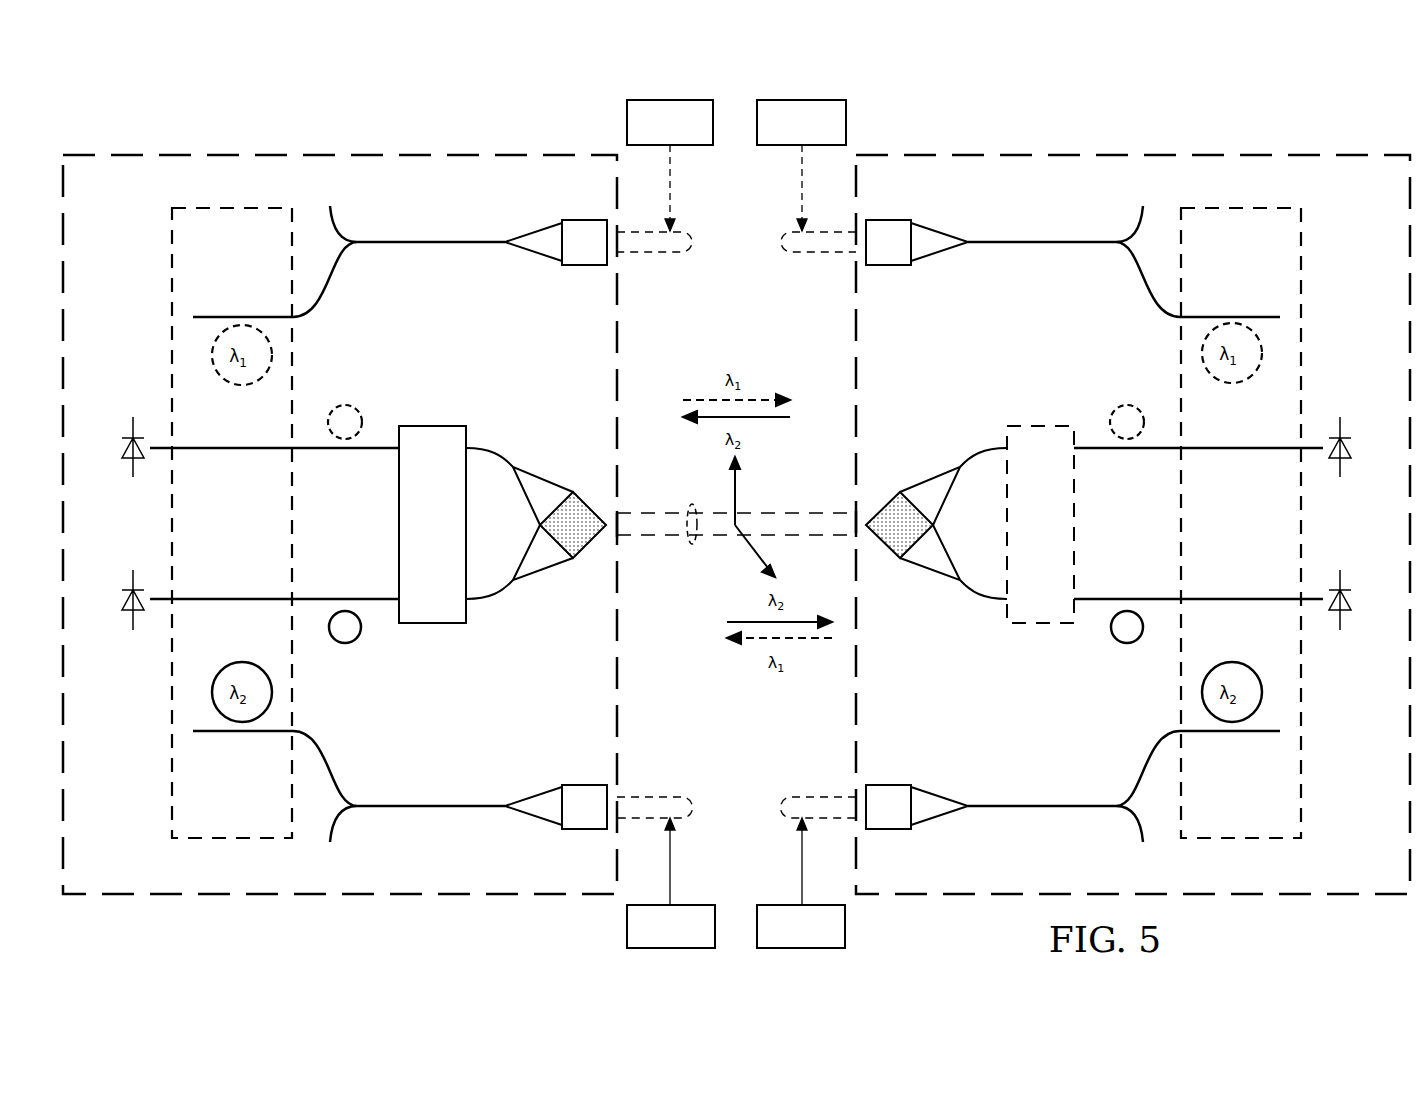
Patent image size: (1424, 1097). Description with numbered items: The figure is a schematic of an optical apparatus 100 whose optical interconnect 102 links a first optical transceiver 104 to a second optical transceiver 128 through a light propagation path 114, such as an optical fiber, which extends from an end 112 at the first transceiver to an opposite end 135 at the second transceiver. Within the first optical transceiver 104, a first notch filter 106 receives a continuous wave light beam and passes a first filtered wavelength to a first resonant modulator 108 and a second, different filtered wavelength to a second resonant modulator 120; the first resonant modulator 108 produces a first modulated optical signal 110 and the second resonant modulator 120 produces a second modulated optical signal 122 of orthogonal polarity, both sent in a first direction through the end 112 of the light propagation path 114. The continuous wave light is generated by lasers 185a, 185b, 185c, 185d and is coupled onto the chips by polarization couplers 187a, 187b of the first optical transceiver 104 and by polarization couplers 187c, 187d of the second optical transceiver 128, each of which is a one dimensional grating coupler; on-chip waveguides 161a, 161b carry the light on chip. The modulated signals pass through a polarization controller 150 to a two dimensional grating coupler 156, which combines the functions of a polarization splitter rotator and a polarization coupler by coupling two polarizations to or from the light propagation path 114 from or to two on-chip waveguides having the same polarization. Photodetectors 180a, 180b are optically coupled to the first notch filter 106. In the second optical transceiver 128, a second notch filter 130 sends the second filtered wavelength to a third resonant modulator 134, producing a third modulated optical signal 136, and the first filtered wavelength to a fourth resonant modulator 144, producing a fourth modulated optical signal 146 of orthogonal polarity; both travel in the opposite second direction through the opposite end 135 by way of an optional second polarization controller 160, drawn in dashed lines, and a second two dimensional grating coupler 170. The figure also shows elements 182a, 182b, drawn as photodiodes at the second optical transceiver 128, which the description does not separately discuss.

The optical apparatus 100 is at (118, 102).
The optical interconnect 102 is at (1140, 492).
The first optical transceiver 104 is at (291, 155).
The first notch filter 106 is at (212, 540).
The first resonant modulator 108 is at (365, 420).
The first modulated optical signal 110 is at (222, 446).
The end of light propagation path 112 is at (620, 508).
The light propagation path 114 is at (692, 546).
The second resonant modulator 120 is at (362, 637).
The second modulated optical signal 122 is at (222, 601).
The second optical transceiver 128 is at (1185, 155).
The second notch filter 130 is at (1222, 540).
The third resonant modulator 134 is at (1108, 637).
The opposite end of light propagation path 135 is at (852, 508).
The third modulated optical signal 136 is at (1252, 601).
The fourth resonant modulator 144 is at (1110, 418).
The fourth modulated optical signal 146 is at (1252, 446).
The polarization controller 150 is at (398, 526).
The two dimensional grating coupler 156 is at (590, 500).
The second polarization controller 160 is at (1074, 520).
The on-chip waveguide 161a is at (437, 240).
The second on-chip waveguide 161b is at (437, 808).
The second two dimensional grating coupler 170 is at (880, 500).
The photodetector 180a is at (124, 455).
The photodetector 180b is at (124, 608).
The photodetector 182a is at (1348, 608).
The photodetector 182b is at (1348, 455).
The laser 185a is at (627, 125).
The laser 185b is at (627, 928).
The laser 185c is at (846, 125).
The laser 185d is at (846, 928).
The polarization coupler 187a is at (588, 220).
The polarization coupler 187b is at (587, 829).
The polarization coupler 187c is at (889, 829).
The polarization coupler 187d is at (889, 220).